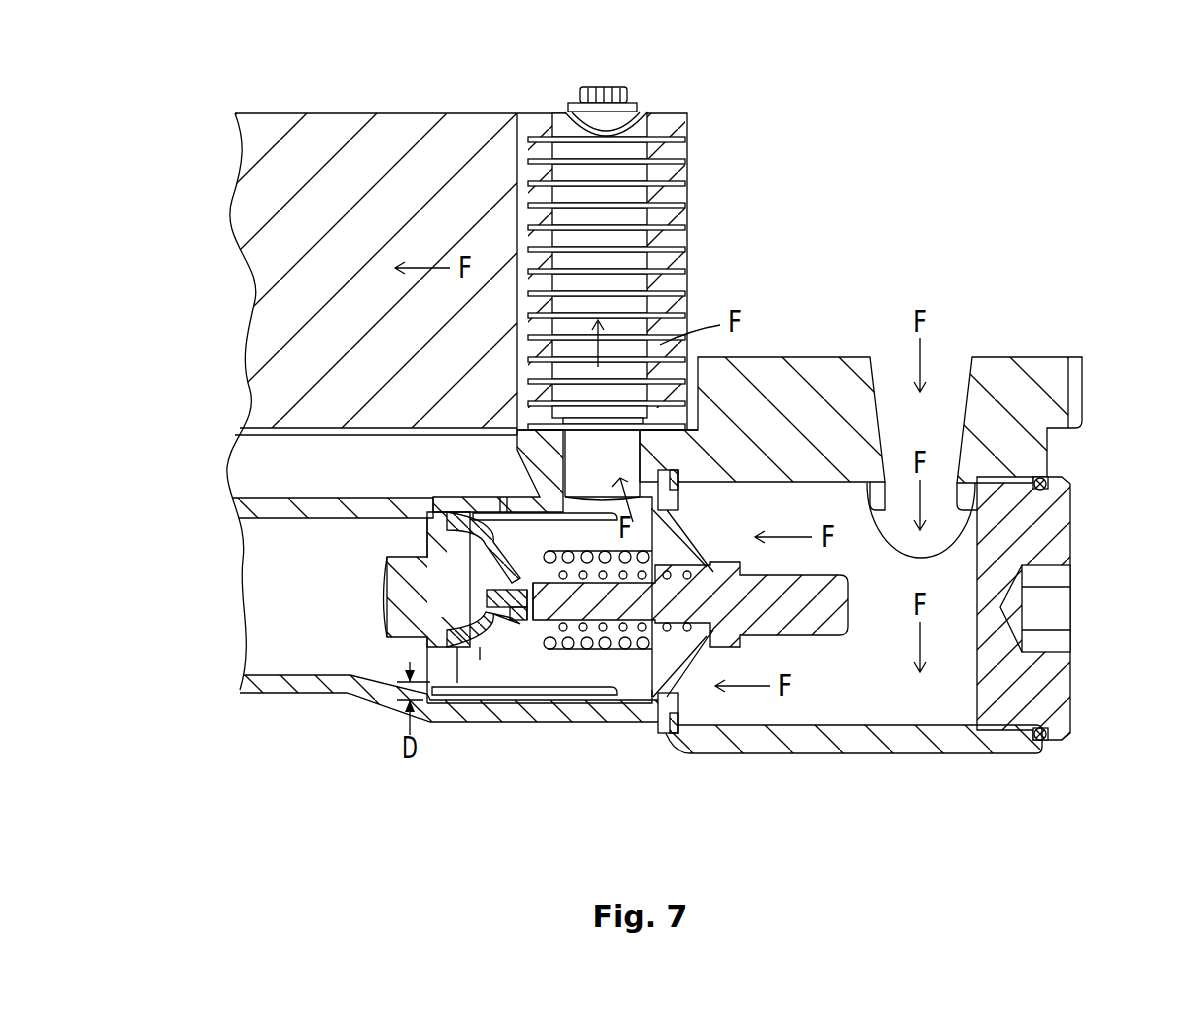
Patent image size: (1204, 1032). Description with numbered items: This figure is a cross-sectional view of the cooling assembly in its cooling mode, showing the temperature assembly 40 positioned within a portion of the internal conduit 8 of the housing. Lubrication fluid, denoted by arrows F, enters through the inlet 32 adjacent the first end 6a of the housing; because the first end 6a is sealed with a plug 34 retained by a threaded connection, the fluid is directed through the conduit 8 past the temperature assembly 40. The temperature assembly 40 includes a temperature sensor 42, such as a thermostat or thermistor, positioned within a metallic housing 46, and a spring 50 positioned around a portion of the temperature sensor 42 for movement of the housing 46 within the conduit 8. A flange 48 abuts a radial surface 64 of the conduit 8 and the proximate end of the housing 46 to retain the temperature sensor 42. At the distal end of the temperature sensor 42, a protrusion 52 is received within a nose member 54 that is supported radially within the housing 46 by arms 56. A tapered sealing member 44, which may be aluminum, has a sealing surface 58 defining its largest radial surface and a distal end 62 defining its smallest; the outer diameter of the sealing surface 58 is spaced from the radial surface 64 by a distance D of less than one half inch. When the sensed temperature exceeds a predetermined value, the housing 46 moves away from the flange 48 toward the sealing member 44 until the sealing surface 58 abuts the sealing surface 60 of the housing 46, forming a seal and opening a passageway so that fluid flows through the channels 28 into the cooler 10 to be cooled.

The cooler 10 is at (352, 112).
The housing 46 is at (565, 496).
The channels 28 is at (723, 423).
The inlet 32 is at (943, 388).
The plug 34 is at (1060, 527).
The first end 6a is at (1018, 753).
The internal conduit 8 is at (272, 618).
The sealing surface 60 is at (505, 508).
The radial surface 64 is at (520, 497).
The sealing member 44 is at (400, 660).
The protrusion 52 is at (486, 598).
The sealing surface 58 is at (462, 560).
The distal end 62 is at (390, 618).
The temperature sensor 42 is at (820, 640).
The spring 50 is at (627, 655).
The nose member 54 is at (520, 627).
The arms 56 is at (462, 660).
The flange 48 is at (665, 722).
The temperature assembly 40 is at (563, 735).